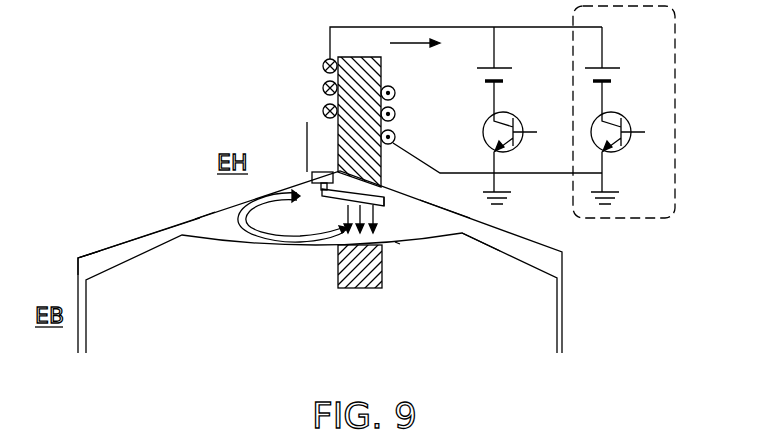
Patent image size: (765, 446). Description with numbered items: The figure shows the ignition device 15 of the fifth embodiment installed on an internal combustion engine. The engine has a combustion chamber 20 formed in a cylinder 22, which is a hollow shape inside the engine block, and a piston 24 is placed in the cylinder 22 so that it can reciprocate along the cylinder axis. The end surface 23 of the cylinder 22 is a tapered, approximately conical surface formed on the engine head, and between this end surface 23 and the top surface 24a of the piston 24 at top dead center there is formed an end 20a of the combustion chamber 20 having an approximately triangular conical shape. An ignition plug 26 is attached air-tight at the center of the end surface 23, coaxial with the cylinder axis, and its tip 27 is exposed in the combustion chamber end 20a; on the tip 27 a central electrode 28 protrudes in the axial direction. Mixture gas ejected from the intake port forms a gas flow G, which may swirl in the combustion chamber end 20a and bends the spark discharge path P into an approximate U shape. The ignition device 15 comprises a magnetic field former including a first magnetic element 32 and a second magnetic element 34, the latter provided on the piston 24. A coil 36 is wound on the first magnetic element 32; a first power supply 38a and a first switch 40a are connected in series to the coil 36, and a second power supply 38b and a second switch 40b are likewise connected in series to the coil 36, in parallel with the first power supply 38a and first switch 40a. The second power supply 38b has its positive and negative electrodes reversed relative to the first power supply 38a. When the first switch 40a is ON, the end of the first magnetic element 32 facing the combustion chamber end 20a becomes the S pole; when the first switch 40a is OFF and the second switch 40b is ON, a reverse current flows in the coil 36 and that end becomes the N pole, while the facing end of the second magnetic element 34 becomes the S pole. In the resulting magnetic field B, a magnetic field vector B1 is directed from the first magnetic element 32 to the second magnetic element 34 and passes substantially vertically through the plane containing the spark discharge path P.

The ignition device 15 is at (198, 117).
The combustion chamber 20 is at (133, 243).
The end of the combustion chamber 20a is at (440, 208).
The cylinder 22 is at (84, 270).
The end surface of the cylinder 23 is at (212, 208).
The piston 24 is at (400, 339).
The top surface of the piston 24a is at (424, 240).
The ignition plug 26 is at (300, 142).
The tip of the ignition plug 27 is at (308, 173).
The central electrode 28 is at (321, 190).
The first magnetic element 32 is at (381, 73).
The second magnetic element 34 is at (337, 272).
The coil 36 is at (323, 66).
The first power supply 38a is at (477, 80).
The second power supply 38b is at (617, 72).
The first switch 40a is at (483, 132).
The second switch 40b is at (622, 152).
The spark discharge path P is at (386, 190).
The magnetic field B is at (392, 219).
The magnetic field vector B1 is at (395, 242).
The gas flow G is at (236, 245).